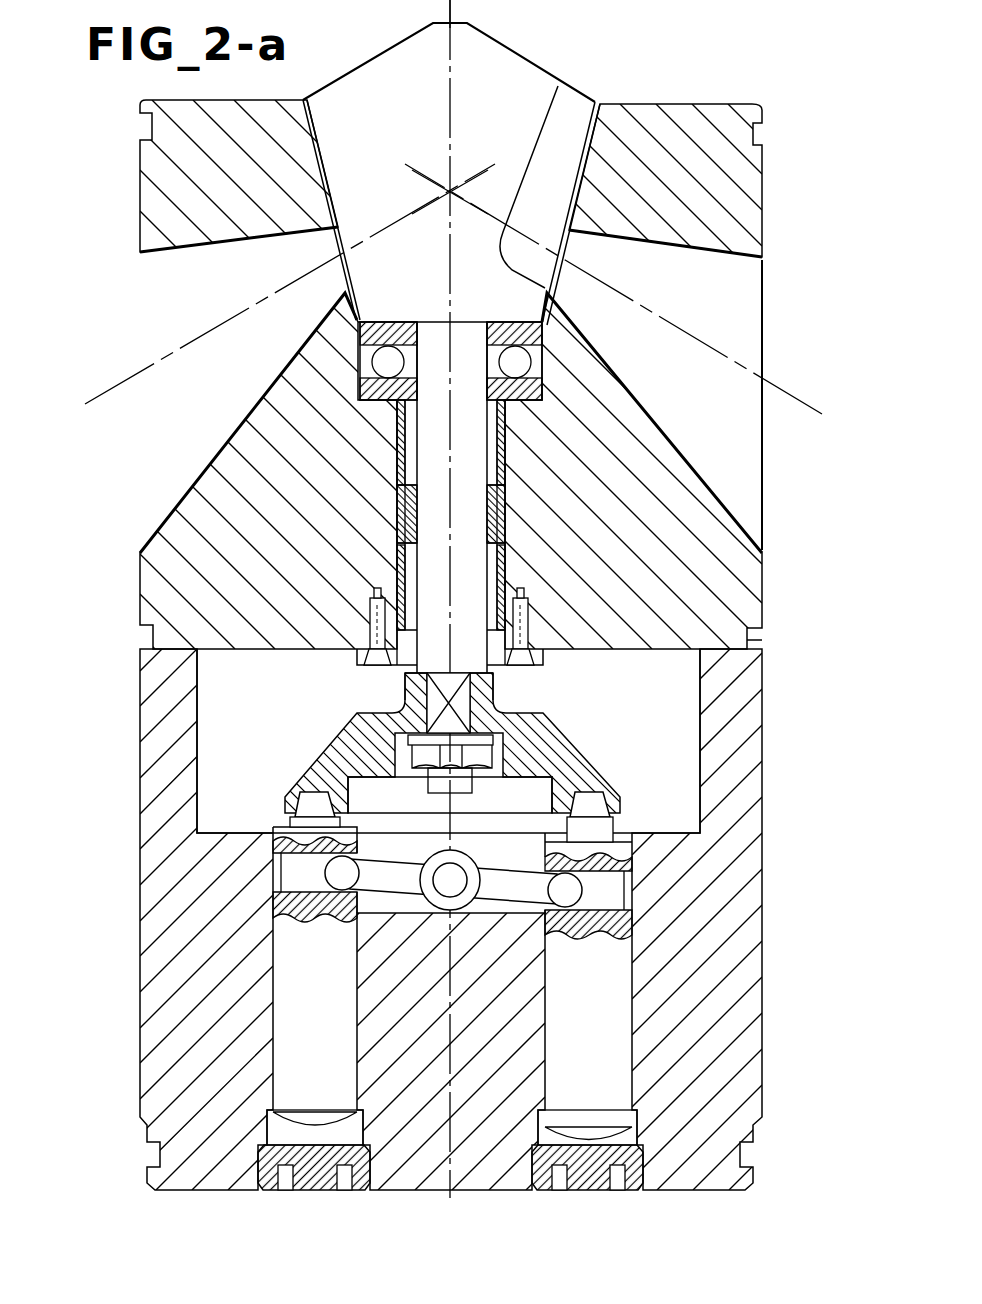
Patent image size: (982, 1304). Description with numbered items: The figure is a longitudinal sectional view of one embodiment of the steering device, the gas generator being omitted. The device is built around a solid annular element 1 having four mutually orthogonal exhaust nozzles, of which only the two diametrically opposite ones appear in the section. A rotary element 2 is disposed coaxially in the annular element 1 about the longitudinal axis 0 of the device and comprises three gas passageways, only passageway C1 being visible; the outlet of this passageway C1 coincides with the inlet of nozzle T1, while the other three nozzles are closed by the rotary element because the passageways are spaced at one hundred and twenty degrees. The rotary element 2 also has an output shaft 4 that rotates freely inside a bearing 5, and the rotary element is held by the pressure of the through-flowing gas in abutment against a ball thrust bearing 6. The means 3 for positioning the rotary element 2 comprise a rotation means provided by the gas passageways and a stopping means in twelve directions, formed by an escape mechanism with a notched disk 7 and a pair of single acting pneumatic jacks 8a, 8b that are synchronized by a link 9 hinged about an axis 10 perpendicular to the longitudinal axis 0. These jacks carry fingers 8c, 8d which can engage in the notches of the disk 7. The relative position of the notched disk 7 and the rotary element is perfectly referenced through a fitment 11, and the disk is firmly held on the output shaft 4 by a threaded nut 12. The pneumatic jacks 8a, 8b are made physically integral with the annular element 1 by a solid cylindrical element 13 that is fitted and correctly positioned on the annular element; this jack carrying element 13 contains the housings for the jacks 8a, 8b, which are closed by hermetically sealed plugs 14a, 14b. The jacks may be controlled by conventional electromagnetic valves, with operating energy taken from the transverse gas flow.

The longitudinal axis 0 is at (435, 14).
The annular element 1 is at (734, 602).
The rotary element 2 is at (408, 60).
The gas passageway C1 is at (567, 110).
The exhaust nozzle T1 is at (737, 292).
The positioning means 3 is at (662, 708).
The output shaft 4 is at (427, 445).
The bearing 5 is at (407, 510).
The ball thrust bearing 6 is at (523, 388).
The notched disk 7 is at (572, 765).
The pneumatic jack 8a is at (607, 1002).
The pneumatic jack 8b is at (285, 1002).
The finger 8c is at (595, 825).
The finger 8d is at (310, 808).
The link 9 is at (500, 887).
The axis 10 is at (443, 888).
The fitment 11 is at (420, 694).
The threaded nut 12 is at (423, 758).
The cylindrical element 13 is at (142, 864).
The plug 14a is at (640, 1147).
The plug 14b is at (362, 1144).